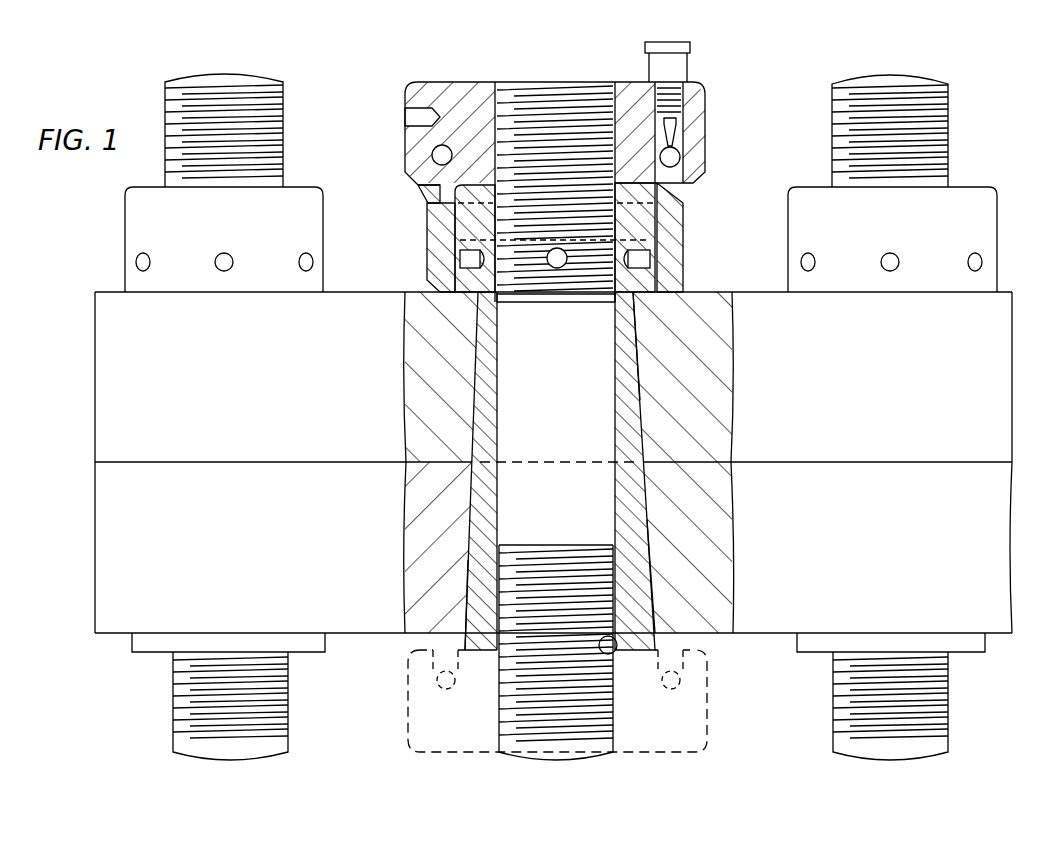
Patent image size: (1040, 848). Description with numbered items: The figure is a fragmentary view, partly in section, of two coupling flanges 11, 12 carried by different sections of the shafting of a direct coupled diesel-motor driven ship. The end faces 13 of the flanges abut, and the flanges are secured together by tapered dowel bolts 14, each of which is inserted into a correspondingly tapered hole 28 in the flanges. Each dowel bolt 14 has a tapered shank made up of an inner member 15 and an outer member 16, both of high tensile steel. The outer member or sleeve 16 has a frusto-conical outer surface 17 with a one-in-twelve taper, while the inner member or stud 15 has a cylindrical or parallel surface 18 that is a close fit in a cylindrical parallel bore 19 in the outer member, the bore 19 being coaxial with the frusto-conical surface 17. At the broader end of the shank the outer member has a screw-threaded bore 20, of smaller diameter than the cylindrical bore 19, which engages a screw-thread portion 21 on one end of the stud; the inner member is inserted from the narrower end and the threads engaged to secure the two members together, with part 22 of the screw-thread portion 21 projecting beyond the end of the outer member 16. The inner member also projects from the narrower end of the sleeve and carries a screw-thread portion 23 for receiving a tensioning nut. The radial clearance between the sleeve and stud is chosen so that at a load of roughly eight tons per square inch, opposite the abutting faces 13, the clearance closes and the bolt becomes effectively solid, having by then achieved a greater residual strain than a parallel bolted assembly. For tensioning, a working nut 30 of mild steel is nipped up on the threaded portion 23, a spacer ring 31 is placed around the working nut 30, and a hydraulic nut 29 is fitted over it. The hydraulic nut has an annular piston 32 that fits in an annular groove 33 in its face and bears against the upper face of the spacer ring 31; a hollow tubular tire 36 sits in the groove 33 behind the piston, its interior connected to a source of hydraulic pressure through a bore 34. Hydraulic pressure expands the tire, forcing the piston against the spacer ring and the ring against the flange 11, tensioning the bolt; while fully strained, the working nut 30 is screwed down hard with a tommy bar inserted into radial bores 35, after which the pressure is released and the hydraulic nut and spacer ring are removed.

The coupling flange 11 is at (815, 374).
The coupling flange 12 is at (815, 560).
The end faces 13 is at (816, 460).
The tapered dowel bolt 14 is at (275, 72).
The inner member 15 is at (565, 406).
The outer member 16 is at (705, 522).
The frusto-conical outer surface 17 is at (640, 335).
The cylindrical surface 18 is at (497, 396).
The cylindrical bore 19 is at (612, 463).
The screw-threaded bore 20 is at (612, 654).
The screw-thread portion 21 is at (614, 700).
The projecting part 22 is at (497, 706).
The screw-thread portion 23 is at (683, 178).
The tapered hole 28 is at (474, 500).
The hydraulic nut 29 is at (630, 82).
The working nut 30 is at (640, 228).
The spacer ring 31 is at (430, 246).
The annular piston 32 is at (440, 200).
The annular groove 33 is at (430, 190).
The bore 34 is at (690, 147).
The radial bores 35 is at (480, 266).
The hollow tubular tire 36 is at (432, 158).